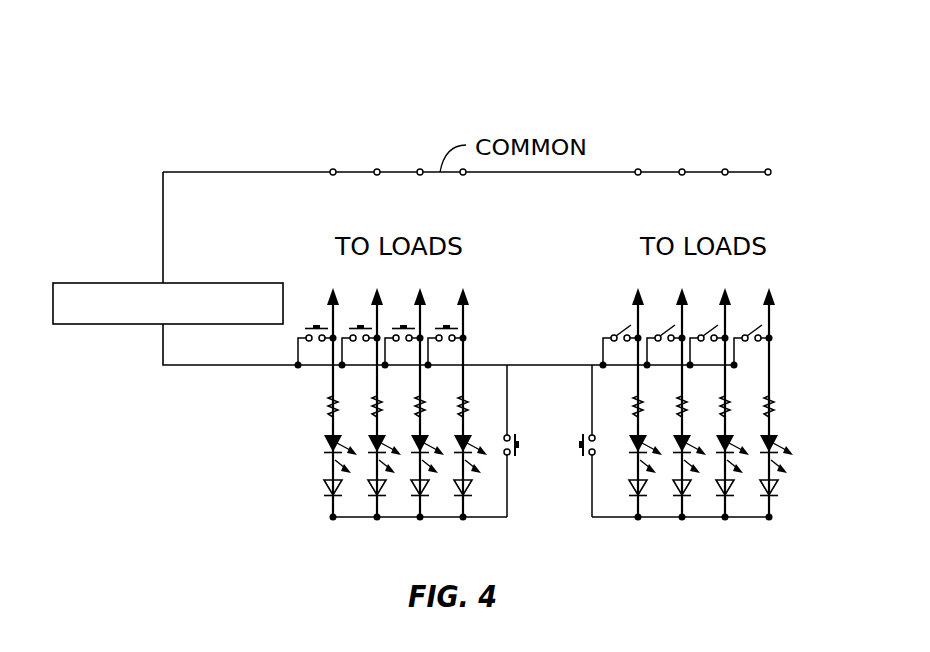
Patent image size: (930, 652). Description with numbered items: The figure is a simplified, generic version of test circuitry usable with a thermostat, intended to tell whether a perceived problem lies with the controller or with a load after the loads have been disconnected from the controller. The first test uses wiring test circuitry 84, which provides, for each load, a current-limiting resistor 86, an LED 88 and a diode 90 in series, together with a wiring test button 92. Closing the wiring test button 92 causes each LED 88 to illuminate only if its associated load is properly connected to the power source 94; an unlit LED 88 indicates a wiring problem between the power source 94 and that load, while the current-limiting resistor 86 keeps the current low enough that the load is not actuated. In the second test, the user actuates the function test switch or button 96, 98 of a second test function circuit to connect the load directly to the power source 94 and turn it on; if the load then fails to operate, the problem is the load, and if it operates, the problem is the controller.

The wiring test circuitry 84 is at (722, 404).
The current-limiting resistor 86 is at (775, 410).
The LED 88 is at (780, 438).
The diode 90 is at (780, 493).
The wiring test button 92 is at (579, 452).
The power source 94 is at (210, 283).
The function test switch 96 is at (626, 331).
The function test button 98 is at (447, 330).